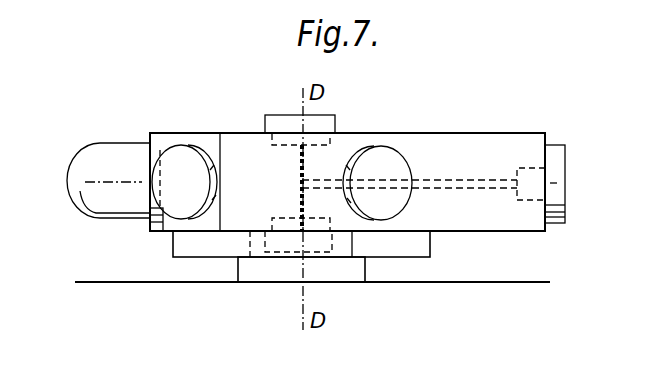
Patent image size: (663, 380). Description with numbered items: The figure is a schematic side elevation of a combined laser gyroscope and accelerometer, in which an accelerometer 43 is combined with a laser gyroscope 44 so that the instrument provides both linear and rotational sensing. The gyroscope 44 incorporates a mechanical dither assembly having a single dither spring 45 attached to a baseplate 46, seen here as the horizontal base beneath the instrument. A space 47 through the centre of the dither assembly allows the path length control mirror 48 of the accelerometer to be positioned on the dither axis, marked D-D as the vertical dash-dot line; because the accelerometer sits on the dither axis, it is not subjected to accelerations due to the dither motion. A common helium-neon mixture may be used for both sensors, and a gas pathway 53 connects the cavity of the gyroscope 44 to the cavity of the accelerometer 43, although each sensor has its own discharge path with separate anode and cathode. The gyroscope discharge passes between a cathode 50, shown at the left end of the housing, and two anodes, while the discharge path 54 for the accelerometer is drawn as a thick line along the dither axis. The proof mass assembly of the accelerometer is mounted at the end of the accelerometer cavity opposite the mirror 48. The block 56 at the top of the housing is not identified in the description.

The accelerometer 43 is at (340, 141).
The laser gyroscope 44 is at (200, 128).
The dither spring 45 is at (190, 250).
The baseplate 46 is at (130, 281).
The space 47 is at (260, 248).
The path length control mirror 48 is at (331, 253).
The cathode 50 is at (108, 160).
The gas pathway 53 is at (458, 180).
The discharge path 54 is at (292, 184).
The cover block 56 is at (338, 112).